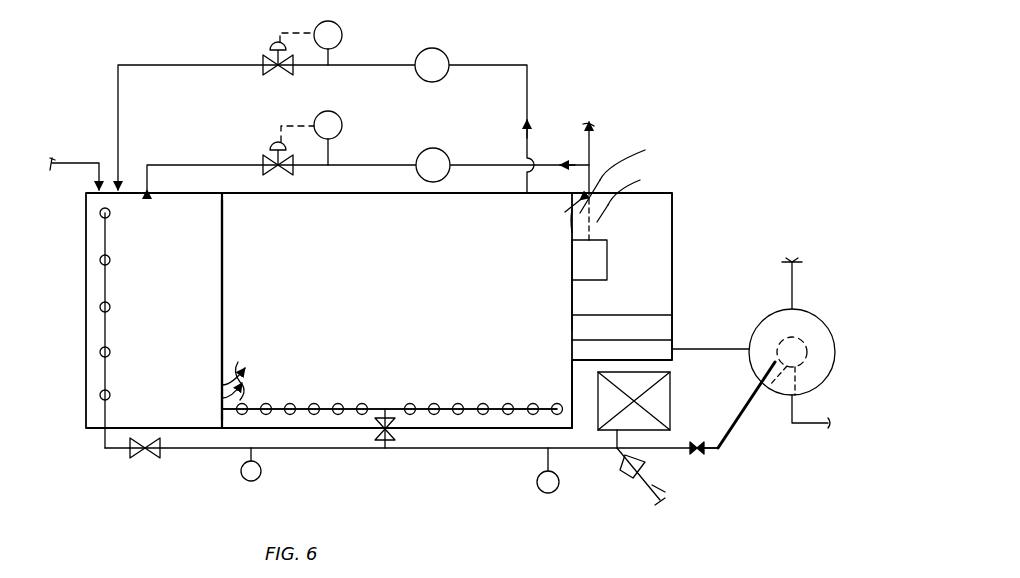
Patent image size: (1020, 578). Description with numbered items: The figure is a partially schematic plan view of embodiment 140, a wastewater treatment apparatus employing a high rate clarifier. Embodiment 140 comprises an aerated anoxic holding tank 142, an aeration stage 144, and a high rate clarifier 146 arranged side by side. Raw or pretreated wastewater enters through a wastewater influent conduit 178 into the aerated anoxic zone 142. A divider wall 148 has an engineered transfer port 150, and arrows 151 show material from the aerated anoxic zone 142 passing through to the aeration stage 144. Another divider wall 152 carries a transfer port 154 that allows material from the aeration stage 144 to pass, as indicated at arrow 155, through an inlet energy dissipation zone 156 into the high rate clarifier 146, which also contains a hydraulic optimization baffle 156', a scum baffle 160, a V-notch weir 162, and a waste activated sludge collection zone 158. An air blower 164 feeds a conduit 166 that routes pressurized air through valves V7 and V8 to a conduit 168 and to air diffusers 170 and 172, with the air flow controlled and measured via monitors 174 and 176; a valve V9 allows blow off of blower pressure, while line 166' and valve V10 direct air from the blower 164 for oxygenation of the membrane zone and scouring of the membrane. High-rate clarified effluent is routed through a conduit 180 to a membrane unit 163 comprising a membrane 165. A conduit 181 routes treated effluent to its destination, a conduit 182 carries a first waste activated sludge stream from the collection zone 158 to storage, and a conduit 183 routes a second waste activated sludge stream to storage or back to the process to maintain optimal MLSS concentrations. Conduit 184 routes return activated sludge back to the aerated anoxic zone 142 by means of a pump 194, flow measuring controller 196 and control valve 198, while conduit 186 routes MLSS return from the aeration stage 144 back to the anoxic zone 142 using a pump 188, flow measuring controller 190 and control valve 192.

The embodiment 140 is at (633, 52).
The aerated anoxic holding tank 142 is at (183, 310).
The aeration stage 144 is at (468, 310).
The high rate clarifier 146 is at (622, 276).
The divider wall 148 is at (222, 262).
The engineered transfer port 150 is at (224, 392).
The arrows 151 is at (247, 370).
The divider wall 152 is at (568, 306).
The transfer port 154 is at (568, 228).
The arrow 155 is at (566, 210).
The inlet energy dissipation zone 156 is at (634, 166).
The hydraulic optimization baffle 156' is at (637, 191).
The waste activated sludge collection zone 158 is at (607, 262).
The scum baffle 160 is at (635, 315).
The V-notch weir 162 is at (645, 340).
The membrane unit 163 is at (808, 312).
The air blower 164 is at (670, 418).
The membrane 165 is at (766, 392).
The conduit 166 is at (411, 472).
The line 166' is at (741, 476).
The conduit 168 is at (380, 406).
The air diffuser 170 is at (338, 404).
The air diffuser 172 is at (111, 390).
The monitor 174 is at (559, 484).
The monitor 176 is at (261, 473).
The wastewater influent conduit 178 is at (80, 162).
The conduit 180 is at (706, 350).
The conduit 181 is at (790, 414).
The conduit 182 is at (594, 140).
The conduit 183 is at (790, 280).
The conduit 184 is at (472, 164).
The conduit 186 is at (528, 98).
The pump 188 is at (444, 53).
The flow measuring controller 190 is at (340, 42).
The control valve 192 is at (268, 62).
The pump 194 is at (433, 148).
The flow measuring controller 196 is at (340, 130).
The control valve 198 is at (268, 162).
The valve V7 is at (395, 436).
The valve V8 is at (150, 456).
The valve V9 is at (645, 468).
The valve V10 is at (700, 455).